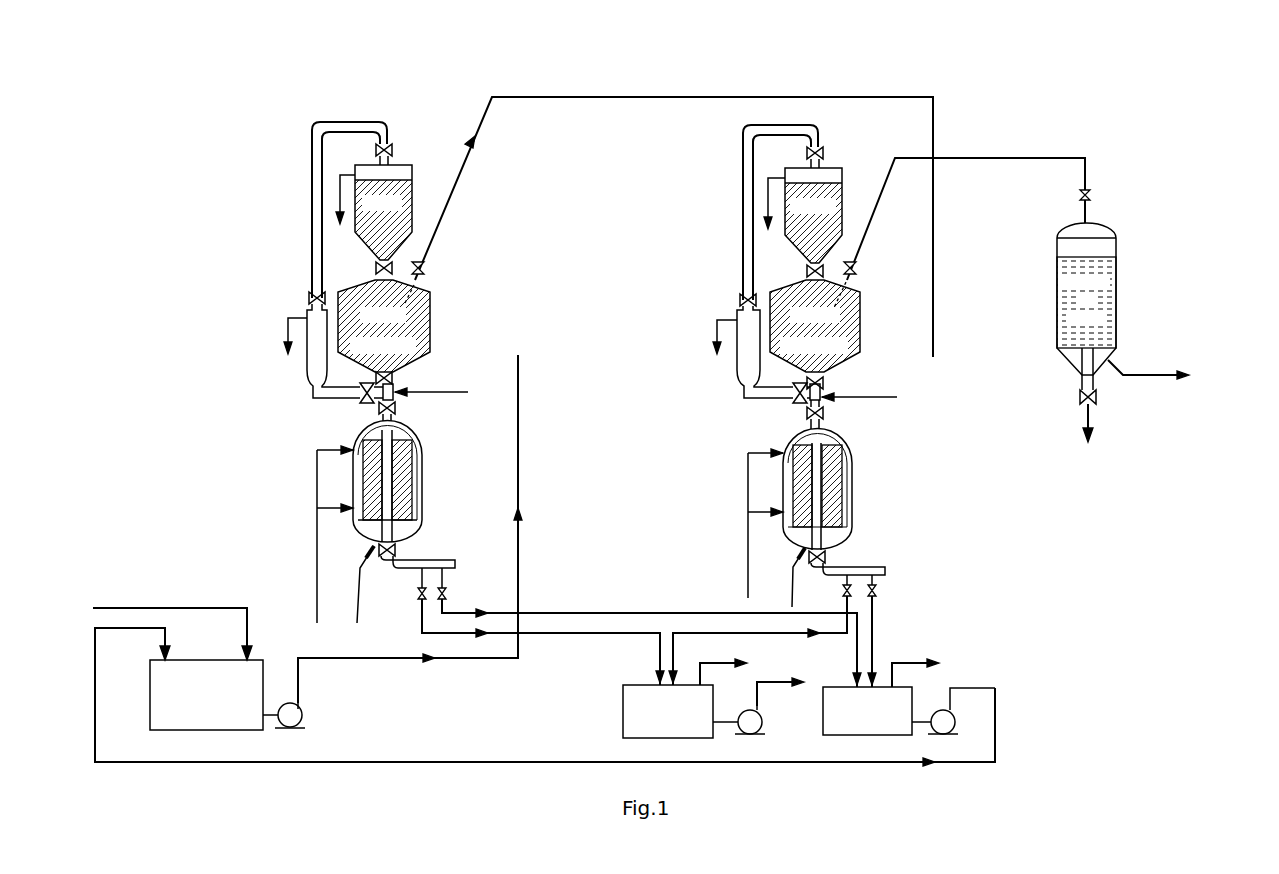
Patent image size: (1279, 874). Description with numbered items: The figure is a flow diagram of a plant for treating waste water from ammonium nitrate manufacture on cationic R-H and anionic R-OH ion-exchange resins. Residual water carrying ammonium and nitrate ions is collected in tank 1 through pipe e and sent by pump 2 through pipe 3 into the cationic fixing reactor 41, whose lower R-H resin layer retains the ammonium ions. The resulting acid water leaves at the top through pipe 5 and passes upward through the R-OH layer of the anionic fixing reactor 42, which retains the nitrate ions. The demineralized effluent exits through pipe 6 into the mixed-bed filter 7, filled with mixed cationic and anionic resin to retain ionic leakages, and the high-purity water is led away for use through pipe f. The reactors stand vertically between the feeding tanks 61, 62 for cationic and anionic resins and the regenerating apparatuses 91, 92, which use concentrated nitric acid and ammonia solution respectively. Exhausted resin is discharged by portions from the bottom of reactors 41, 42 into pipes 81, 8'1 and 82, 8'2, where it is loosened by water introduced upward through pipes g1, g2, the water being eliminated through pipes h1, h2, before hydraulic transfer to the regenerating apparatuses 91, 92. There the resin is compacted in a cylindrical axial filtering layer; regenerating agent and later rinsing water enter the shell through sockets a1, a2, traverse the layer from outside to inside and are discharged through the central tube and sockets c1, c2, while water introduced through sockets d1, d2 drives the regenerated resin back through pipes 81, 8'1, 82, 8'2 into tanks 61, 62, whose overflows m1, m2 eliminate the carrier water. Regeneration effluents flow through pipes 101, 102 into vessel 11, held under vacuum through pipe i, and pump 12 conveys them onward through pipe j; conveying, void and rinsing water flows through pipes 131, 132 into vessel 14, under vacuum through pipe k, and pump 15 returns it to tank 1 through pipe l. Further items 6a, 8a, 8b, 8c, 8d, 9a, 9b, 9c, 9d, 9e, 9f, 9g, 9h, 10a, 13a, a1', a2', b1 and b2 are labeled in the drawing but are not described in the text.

The tank 1 is at (157, 700).
The pump 2 is at (302, 712).
The pipe 3 is at (410, 529).
The cationic fixing reactor 41 is at (430, 320).
The anionic fixing reactor 42 is at (860, 328).
The pipe 5 is at (455, 192).
The pipe 6 is at (1026, 158).
The feeding tank for cationic resin 61 is at (412, 195).
The feeding tank for anionic resin 62 is at (842, 200).
The hopper outlet valve 6a is at (376, 268).
The mixed-bed filter 7 is at (1117, 293).
The valve 8a is at (392, 150).
The valve 8b is at (308, 298).
The separator pipe 8c is at (307, 378).
The pipe 8d is at (366, 408).
The pipe 81 is at (332, 398).
The pipe 8'1 is at (326, 210).
The pipe 82 is at (768, 398).
The pipe 8'2 is at (761, 212).
The valve 9a is at (374, 378).
The column inlet 9b is at (398, 404).
The resin bed 9c is at (422, 486).
The central tube 9d is at (400, 494).
The column wall 9e is at (422, 510).
The bottom plate 9f is at (402, 528).
The column bottom 9g is at (364, 526).
The resin bed 9h is at (405, 440).
The regenerating apparatus 91 is at (411, 473).
The regenerating apparatus 92 is at (852, 488).
The valve 10a is at (418, 592).
The pipe 101 is at (580, 636).
The pipe 102 is at (795, 636).
The vessel 11 is at (622, 712).
The pump 12 is at (758, 732).
The valve 13a is at (447, 593).
The pipe 131 is at (608, 613).
The pipe 132 is at (876, 618).
The vessel 14 is at (860, 733).
The pump 15 is at (952, 728).
The socket a1 is at (335, 442).
The socket a2 is at (323, 536).
The ammonia inlet a1' is at (765, 445).
The ammonia inlet a2' is at (754, 526).
The valve b1 is at (396, 410).
The valve b2 is at (826, 413).
The socket c1 is at (397, 551).
The socket c2 is at (828, 555).
The socket d1 is at (356, 587).
The socket d2 is at (788, 556).
The pipe e is at (220, 605).
The pipe f is at (1127, 380).
The pipe g1 is at (434, 396).
The pipe g2 is at (864, 399).
The pipe h1 is at (284, 336).
The pipe h2 is at (716, 340).
The pipe i is at (712, 663).
The pipe j is at (765, 684).
The pipe k is at (918, 660).
The pipe l is at (440, 762).
The overflow m1 is at (340, 184).
The overflow m2 is at (770, 187).